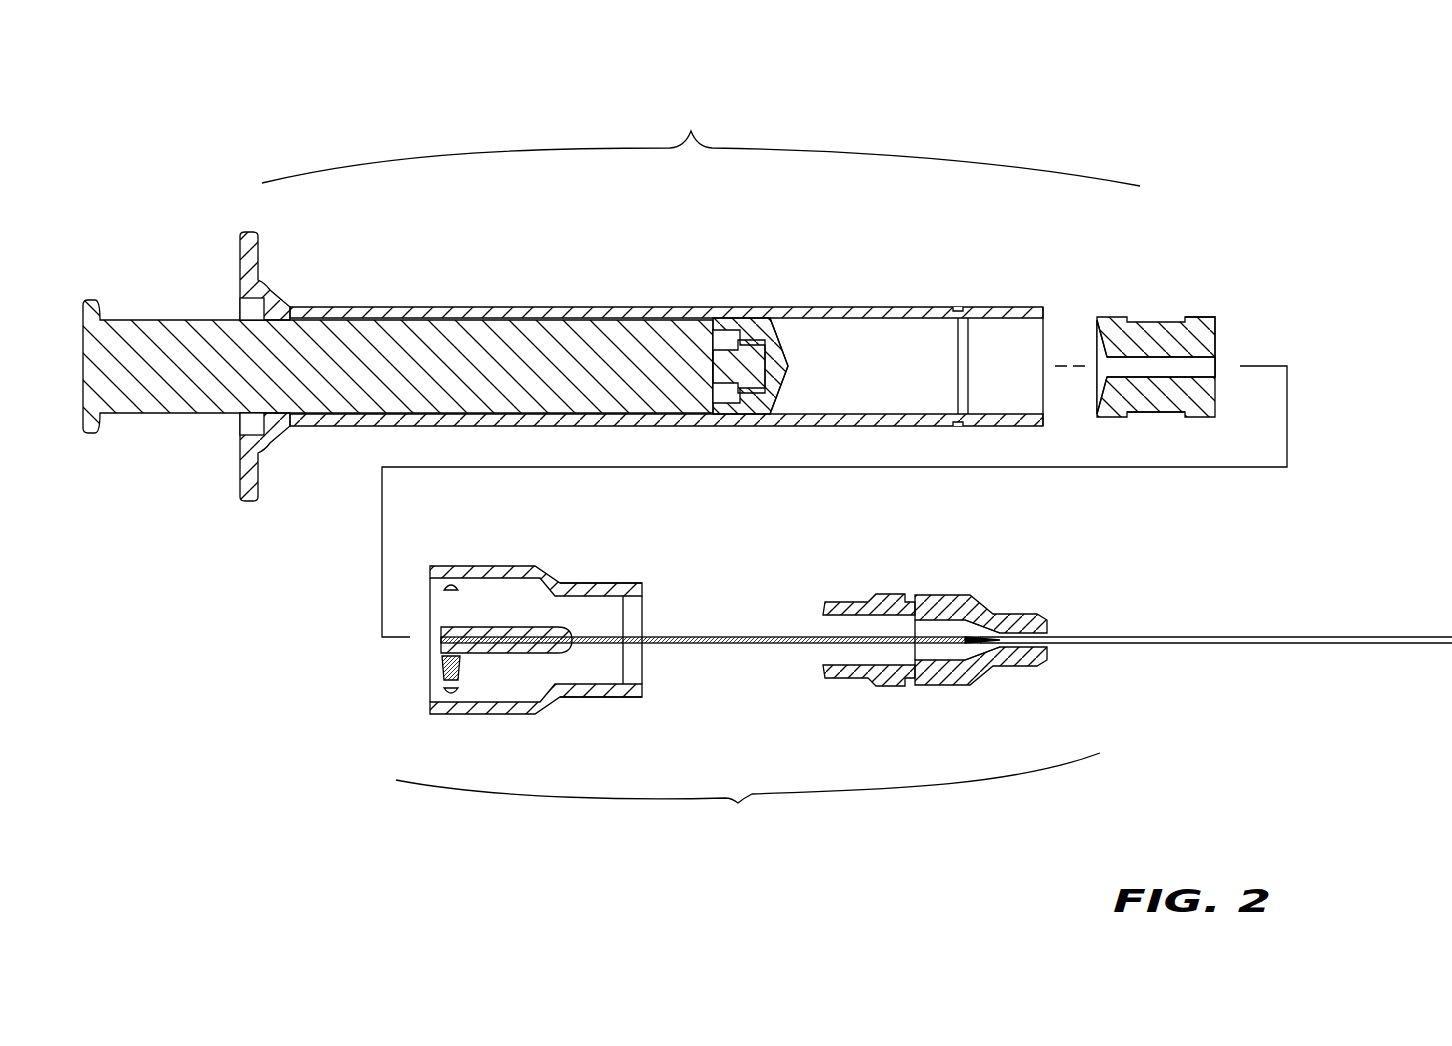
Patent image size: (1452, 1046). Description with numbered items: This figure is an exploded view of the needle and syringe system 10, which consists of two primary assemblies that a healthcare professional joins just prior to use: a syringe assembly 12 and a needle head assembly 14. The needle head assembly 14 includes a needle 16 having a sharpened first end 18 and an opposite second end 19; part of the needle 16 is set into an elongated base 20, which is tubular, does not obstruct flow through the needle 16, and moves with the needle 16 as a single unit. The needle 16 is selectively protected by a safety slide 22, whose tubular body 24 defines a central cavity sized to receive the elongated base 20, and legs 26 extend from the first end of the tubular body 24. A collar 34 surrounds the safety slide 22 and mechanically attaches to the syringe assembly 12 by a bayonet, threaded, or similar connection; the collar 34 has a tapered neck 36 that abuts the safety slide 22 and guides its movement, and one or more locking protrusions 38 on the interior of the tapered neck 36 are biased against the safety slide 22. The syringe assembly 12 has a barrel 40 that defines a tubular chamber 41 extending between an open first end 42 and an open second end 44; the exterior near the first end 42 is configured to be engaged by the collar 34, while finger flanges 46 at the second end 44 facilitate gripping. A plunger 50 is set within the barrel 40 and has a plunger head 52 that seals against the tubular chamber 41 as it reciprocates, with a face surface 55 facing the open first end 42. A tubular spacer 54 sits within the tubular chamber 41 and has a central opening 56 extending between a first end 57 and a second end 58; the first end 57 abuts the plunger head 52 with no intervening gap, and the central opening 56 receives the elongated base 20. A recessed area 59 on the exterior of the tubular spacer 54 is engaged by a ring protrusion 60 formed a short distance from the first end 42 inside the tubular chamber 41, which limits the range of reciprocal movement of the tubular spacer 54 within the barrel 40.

The needle and syringe system 10 is at (1190, 190).
The syringe assembly 12 is at (701, 137).
The needle head assembly 14 is at (748, 799).
The needle 16 is at (735, 637).
The sharpened first end 18 is at (985, 648).
The second end 19 is at (440, 637).
The elongated base 20 is at (445, 650).
The safety slide 22 is at (935, 597).
The tubular body 24 is at (940, 660).
The legs 26 is at (834, 673).
The collar 34 is at (515, 710).
The tapered neck 36 is at (615, 585).
The locking protrusions 38 is at (640, 680).
The barrel 40 is at (818, 307).
The tubular chamber 41 is at (880, 335).
The open first end 42 is at (1050, 318).
The open second end 44 is at (240, 420).
The finger flanges 46 is at (258, 263).
The plunger 50 is at (170, 332).
The plunger head 52 is at (745, 328).
The tubular spacer 54 is at (1200, 315).
The face surface 55 is at (780, 390).
The central opening 56 is at (1140, 365).
The first end 57 is at (1098, 393).
The second end 58 is at (1216, 352).
The recessed area 59 is at (1148, 412).
The ring protrusion 60 is at (975, 312).